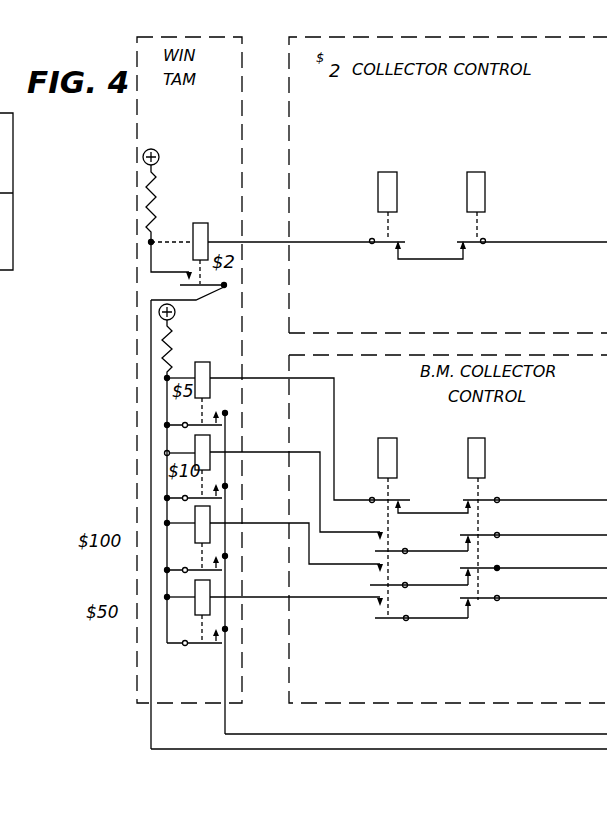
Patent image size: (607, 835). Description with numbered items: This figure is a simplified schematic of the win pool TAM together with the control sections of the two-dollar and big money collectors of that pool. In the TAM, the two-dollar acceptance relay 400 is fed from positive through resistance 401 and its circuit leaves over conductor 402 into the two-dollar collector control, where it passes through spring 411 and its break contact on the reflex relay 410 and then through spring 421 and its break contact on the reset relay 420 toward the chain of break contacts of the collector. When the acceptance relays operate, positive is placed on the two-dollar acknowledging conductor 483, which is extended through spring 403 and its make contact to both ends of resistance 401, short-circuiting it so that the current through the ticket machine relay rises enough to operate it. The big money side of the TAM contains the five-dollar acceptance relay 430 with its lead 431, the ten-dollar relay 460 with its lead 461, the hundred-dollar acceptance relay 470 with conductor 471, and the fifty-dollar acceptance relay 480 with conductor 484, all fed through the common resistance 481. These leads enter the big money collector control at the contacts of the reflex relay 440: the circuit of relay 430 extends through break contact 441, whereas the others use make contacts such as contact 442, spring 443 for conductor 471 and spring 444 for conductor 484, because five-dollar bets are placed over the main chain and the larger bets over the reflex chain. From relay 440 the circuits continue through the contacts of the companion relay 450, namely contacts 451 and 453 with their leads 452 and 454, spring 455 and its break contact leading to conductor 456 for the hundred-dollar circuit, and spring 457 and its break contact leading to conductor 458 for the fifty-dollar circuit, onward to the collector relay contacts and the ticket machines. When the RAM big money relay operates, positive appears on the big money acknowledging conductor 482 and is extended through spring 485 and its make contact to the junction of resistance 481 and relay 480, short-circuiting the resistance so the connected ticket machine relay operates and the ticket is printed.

The $2.00 acceptance relay 400 is at (218, 228).
The resistance 401 is at (158, 200).
The conductor 402 is at (282, 241).
The spring 403 is at (197, 300).
The reflex relay 410 is at (395, 182).
The spring 411 is at (392, 249).
The reset relay 420 is at (484, 182).
The spring 421 is at (470, 248).
The $5.00 acceptance relay 430 is at (195, 372).
The lead from relay 430 431 is at (279, 386).
The reflex relay 440 is at (404, 432).
The break contact 441 is at (380, 497).
The contact of relay 440 442 is at (376, 551).
The spring 443 is at (373, 585).
The spring 444 is at (376, 618).
The relay 450 is at (484, 448).
The contact of relay 450 451 is at (465, 497).
The output lead 452 is at (582, 498).
The contact of relay 450 453 is at (468, 536).
The output lead 454 is at (582, 537).
The spring 455 is at (466, 569).
The conductor 456 is at (582, 568).
The spring 457 is at (466, 600).
The conductor 458 is at (582, 598).
The $10.00 relay 460 is at (195, 452).
The lead from relay 460 461 is at (280, 457).
The $100.00 acceptance relay 470 is at (195, 535).
The conductor 471 is at (280, 527).
The $50.00 acceptance relay 480 is at (195, 604).
The resistance 481 is at (160, 340).
The big money acknowledging conductor 482 is at (565, 734).
The $2.00 acknowledging conductor 483 is at (463, 749).
The conductor 484 is at (282, 602).
The spring 485 is at (200, 644).